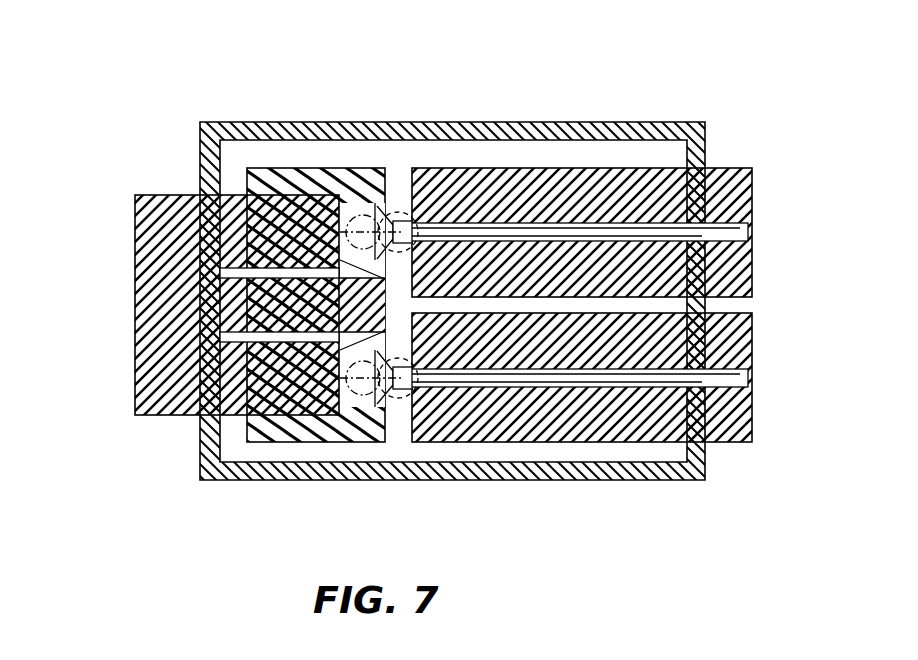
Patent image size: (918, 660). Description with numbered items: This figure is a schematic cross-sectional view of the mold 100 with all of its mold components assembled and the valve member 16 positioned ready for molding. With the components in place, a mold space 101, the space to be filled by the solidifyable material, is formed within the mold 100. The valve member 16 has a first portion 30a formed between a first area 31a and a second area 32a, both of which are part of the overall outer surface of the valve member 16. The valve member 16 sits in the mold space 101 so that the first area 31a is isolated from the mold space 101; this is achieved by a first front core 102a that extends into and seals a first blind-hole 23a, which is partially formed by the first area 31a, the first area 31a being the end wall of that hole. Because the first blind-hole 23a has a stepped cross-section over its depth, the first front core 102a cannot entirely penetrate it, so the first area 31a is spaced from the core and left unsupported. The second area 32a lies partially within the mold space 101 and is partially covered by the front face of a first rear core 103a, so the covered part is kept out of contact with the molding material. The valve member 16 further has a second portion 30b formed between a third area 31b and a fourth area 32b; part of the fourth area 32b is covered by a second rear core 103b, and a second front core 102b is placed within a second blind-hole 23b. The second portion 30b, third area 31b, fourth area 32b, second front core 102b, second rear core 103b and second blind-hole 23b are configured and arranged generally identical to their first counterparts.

The mold 100 is at (475, 305).
The mold space 101 is at (642, 153).
The valve member 16 is at (312, 185).
The first front core 102a is at (278, 207).
The second front core 102b is at (278, 407).
The first rear core 103a is at (748, 236).
The second rear core 103b is at (748, 383).
The first blind-hole 23a is at (352, 217).
The second blind-hole 23b is at (350, 393).
The first portion 30a is at (414, 216).
The second portion 30b is at (412, 398).
The first area 31a is at (370, 213).
The third area 31b is at (370, 400).
The second area 32a is at (415, 222).
The fourth area 32b is at (417, 390).